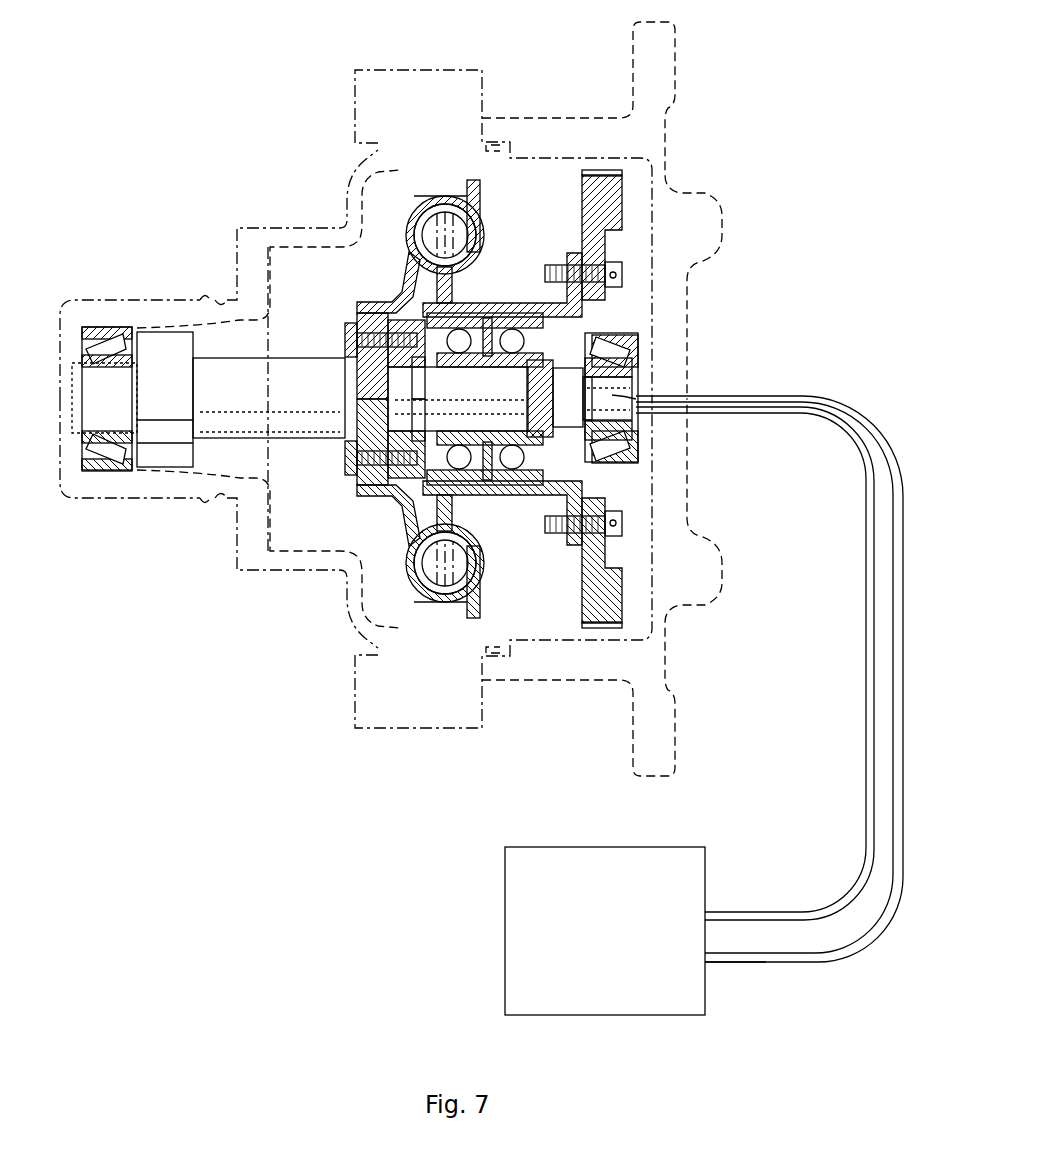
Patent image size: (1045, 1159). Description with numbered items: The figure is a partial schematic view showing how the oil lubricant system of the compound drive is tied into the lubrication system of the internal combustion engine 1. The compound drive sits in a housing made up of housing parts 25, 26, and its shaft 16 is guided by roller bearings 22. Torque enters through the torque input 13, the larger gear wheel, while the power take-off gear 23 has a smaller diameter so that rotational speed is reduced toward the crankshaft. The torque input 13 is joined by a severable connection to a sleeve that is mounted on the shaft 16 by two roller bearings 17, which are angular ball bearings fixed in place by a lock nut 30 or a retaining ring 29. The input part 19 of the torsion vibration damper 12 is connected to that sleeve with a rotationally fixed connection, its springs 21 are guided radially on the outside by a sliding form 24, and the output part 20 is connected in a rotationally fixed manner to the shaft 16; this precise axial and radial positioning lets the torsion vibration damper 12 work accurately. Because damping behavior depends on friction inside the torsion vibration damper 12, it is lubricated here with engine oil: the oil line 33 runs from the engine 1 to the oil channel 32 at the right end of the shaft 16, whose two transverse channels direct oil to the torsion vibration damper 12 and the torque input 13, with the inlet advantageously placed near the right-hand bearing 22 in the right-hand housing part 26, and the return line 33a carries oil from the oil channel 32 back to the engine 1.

The combustion engine 1 is at (597, 947).
The torsion vibration damper 12 is at (393, 583).
The torque input 13 is at (612, 172).
The shaft 16 is at (283, 395).
The roller bearings 17 is at (510, 340).
The input part 19 is at (450, 288).
The output part 20 is at (395, 292).
The springs 21 is at (420, 195).
The roller bearings 22 is at (98, 343).
The power take-off gear 23 is at (177, 394).
The sliding form 24 is at (457, 600).
The housing part 25 is at (418, 700).
The housing part 26 is at (585, 658).
The retaining ring 29 is at (548, 480).
The lock nut 30 is at (553, 450).
The oil channel 32 is at (640, 396).
The oil line 33 is at (866, 697).
The return line 33a is at (766, 963).